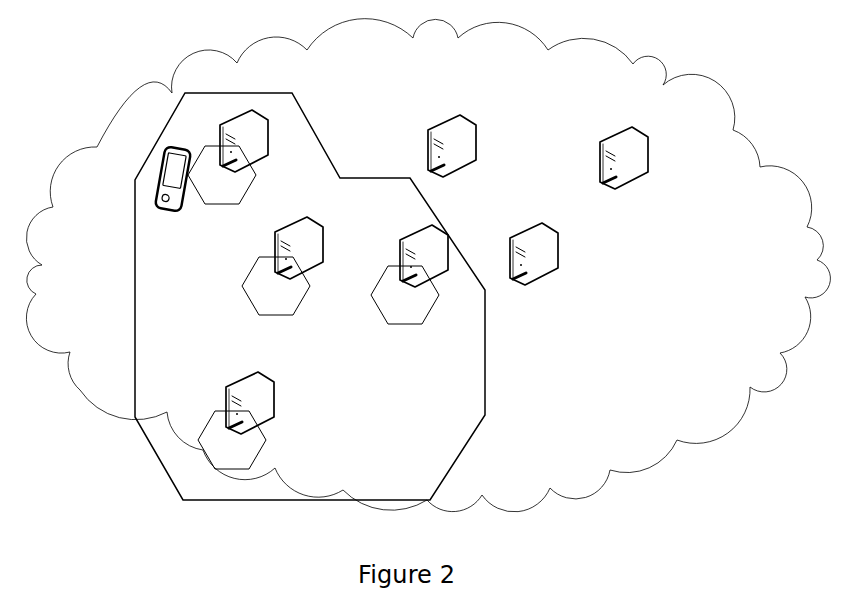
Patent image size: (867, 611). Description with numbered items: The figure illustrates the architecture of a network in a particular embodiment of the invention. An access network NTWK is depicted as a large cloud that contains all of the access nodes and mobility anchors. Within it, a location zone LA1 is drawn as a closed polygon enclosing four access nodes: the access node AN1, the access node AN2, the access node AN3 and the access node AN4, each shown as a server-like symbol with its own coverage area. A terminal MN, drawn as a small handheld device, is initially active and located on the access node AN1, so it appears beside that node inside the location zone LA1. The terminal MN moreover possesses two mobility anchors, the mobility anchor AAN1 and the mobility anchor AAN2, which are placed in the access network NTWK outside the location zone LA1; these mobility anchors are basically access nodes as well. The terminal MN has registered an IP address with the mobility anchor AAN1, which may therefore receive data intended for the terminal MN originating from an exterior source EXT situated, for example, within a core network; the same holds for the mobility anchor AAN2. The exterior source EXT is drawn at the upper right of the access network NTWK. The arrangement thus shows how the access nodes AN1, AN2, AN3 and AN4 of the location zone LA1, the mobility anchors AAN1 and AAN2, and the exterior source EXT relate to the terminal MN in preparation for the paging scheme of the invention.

The terminal MN is at (170, 148).
The access node AN1 is at (252, 110).
The access node AN2 is at (307, 217).
The access node AN3 is at (432, 226).
The access node AN4 is at (242, 378).
The mobility anchor AAN1 is at (428, 142).
The mobility anchor AAN2 is at (557, 227).
The exterior source EXT is at (632, 127).
The location zone LA1 is at (485, 365).
The access network NTWK is at (670, 470).